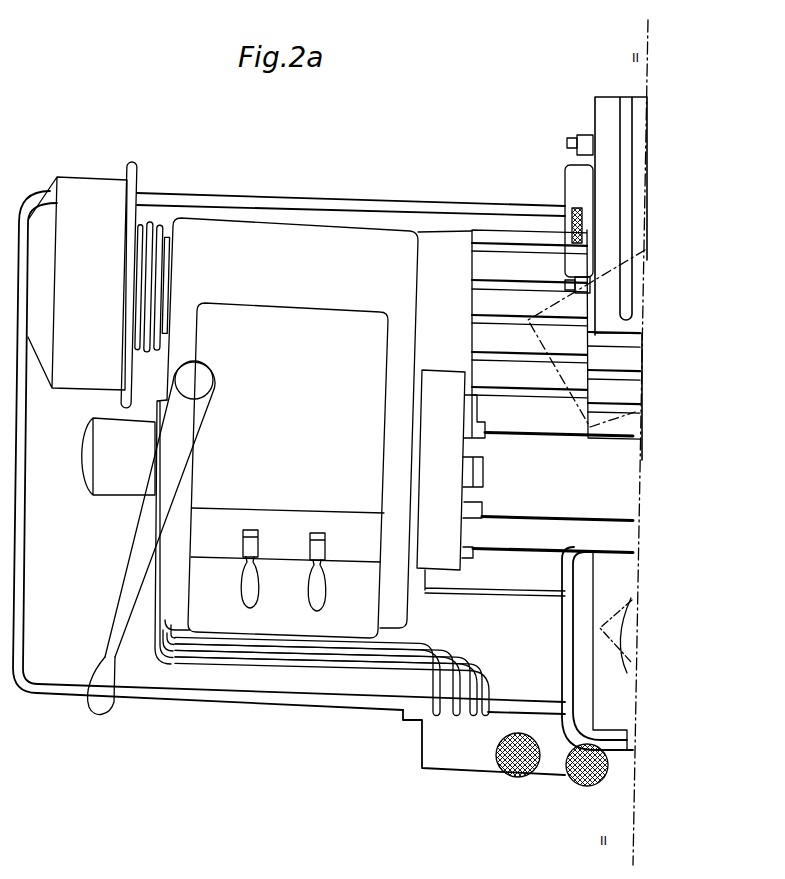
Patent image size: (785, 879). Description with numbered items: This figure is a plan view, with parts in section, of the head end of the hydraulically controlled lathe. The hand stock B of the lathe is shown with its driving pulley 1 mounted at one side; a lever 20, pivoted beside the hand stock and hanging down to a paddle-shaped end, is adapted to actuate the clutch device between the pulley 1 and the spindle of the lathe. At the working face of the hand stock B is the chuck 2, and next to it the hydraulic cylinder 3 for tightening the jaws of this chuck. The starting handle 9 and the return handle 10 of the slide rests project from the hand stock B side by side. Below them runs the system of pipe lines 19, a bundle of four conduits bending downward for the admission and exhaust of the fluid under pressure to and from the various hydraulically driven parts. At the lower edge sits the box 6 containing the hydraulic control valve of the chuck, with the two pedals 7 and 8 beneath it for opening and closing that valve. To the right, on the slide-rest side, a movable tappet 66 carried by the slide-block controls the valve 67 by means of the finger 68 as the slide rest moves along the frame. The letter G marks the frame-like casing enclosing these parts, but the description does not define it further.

The driving pulley 1 is at (77, 283).
The chuck 2 is at (491, 483).
The hydraulic cylinder 3 is at (118, 456).
The box 6 is at (484, 742).
The pedal 7 is at (516, 778).
The pedal 8 is at (590, 783).
The starting handle 9 is at (246, 596).
The return handle 10 is at (327, 599).
The system of pipe lines 19 is at (383, 657).
The lever 20 is at (96, 711).
The movable tappet 66 is at (573, 142).
The valve 67 is at (573, 173).
The finger 68 is at (572, 215).
The hand stock B is at (313, 441).
The frame G is at (289, 450).